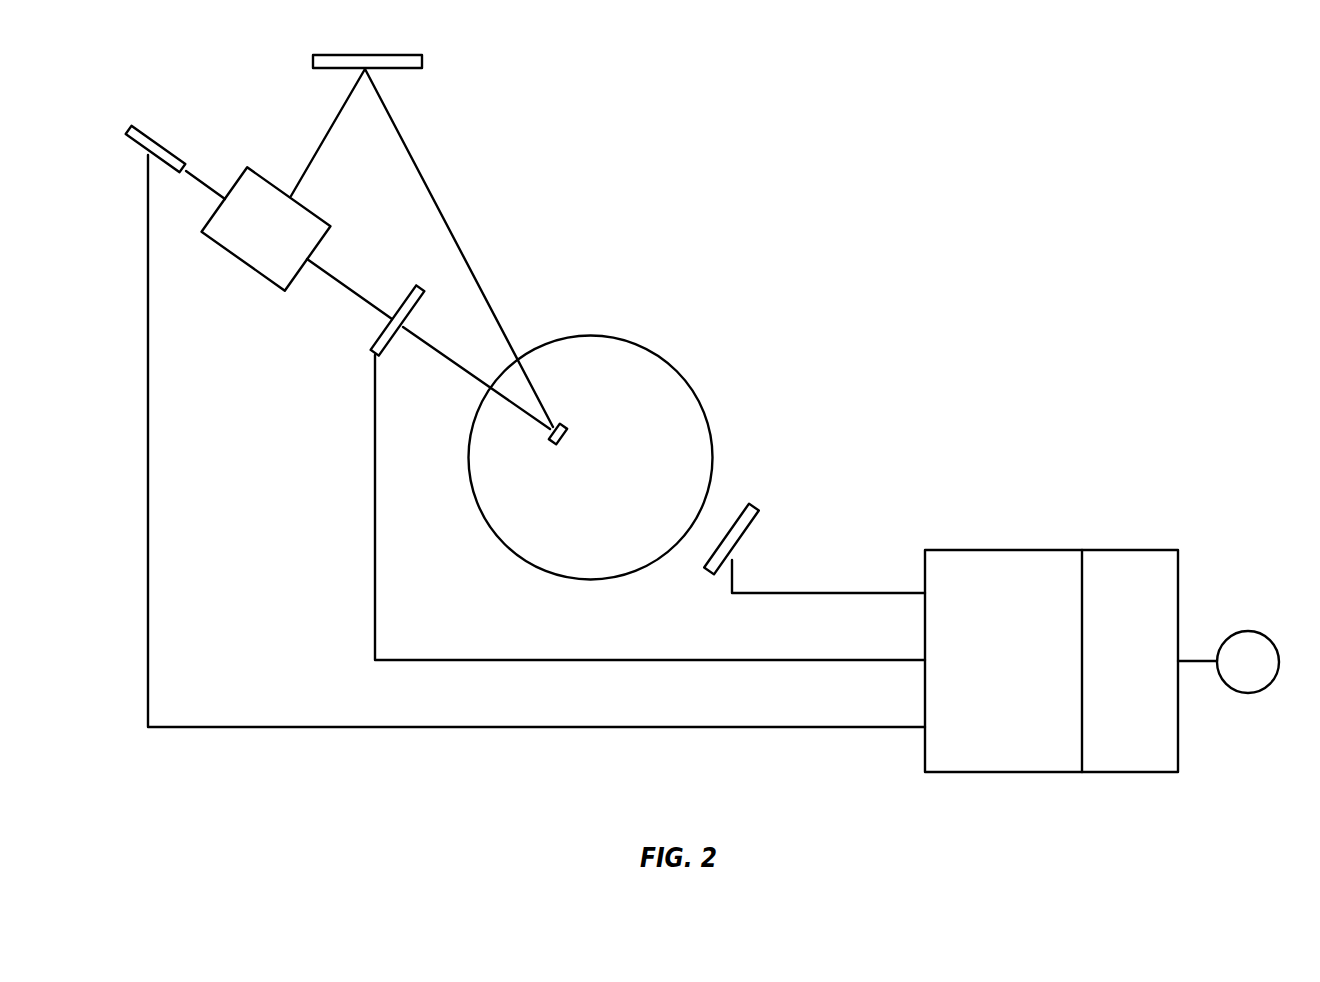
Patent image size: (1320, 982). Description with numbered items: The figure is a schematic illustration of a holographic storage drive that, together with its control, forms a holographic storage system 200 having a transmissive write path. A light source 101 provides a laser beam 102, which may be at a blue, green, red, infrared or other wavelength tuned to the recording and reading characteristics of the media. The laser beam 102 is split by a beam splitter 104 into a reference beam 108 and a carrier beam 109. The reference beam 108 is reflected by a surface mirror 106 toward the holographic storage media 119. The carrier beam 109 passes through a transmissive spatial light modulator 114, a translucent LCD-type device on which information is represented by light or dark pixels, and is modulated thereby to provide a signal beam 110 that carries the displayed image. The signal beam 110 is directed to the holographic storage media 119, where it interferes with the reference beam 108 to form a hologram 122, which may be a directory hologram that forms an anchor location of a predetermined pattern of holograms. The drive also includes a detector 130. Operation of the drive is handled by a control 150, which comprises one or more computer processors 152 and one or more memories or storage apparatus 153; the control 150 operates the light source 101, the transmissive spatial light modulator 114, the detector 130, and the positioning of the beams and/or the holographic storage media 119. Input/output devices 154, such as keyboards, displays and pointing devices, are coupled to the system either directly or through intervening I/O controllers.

The holographic storage system 200 is at (772, 170).
The light source 101 is at (122, 127).
The laser beam 102 is at (254, 214).
The beam splitter 104 is at (243, 266).
The surface mirror 106 is at (422, 62).
The reference beam 108 is at (451, 222).
The carrier beam 109 is at (350, 292).
The signal beam 110 is at (462, 367).
The transmissive spatial light modulator 114 is at (403, 290).
The holographic storage media 119 is at (713, 448).
The hologram 122 is at (567, 436).
The detector 130 is at (756, 505).
The control 150 is at (1051, 645).
The computer processor 152 is at (1027, 677).
The memory or storage apparatus 153 is at (1152, 677).
The input/output device 154 is at (1248, 631).